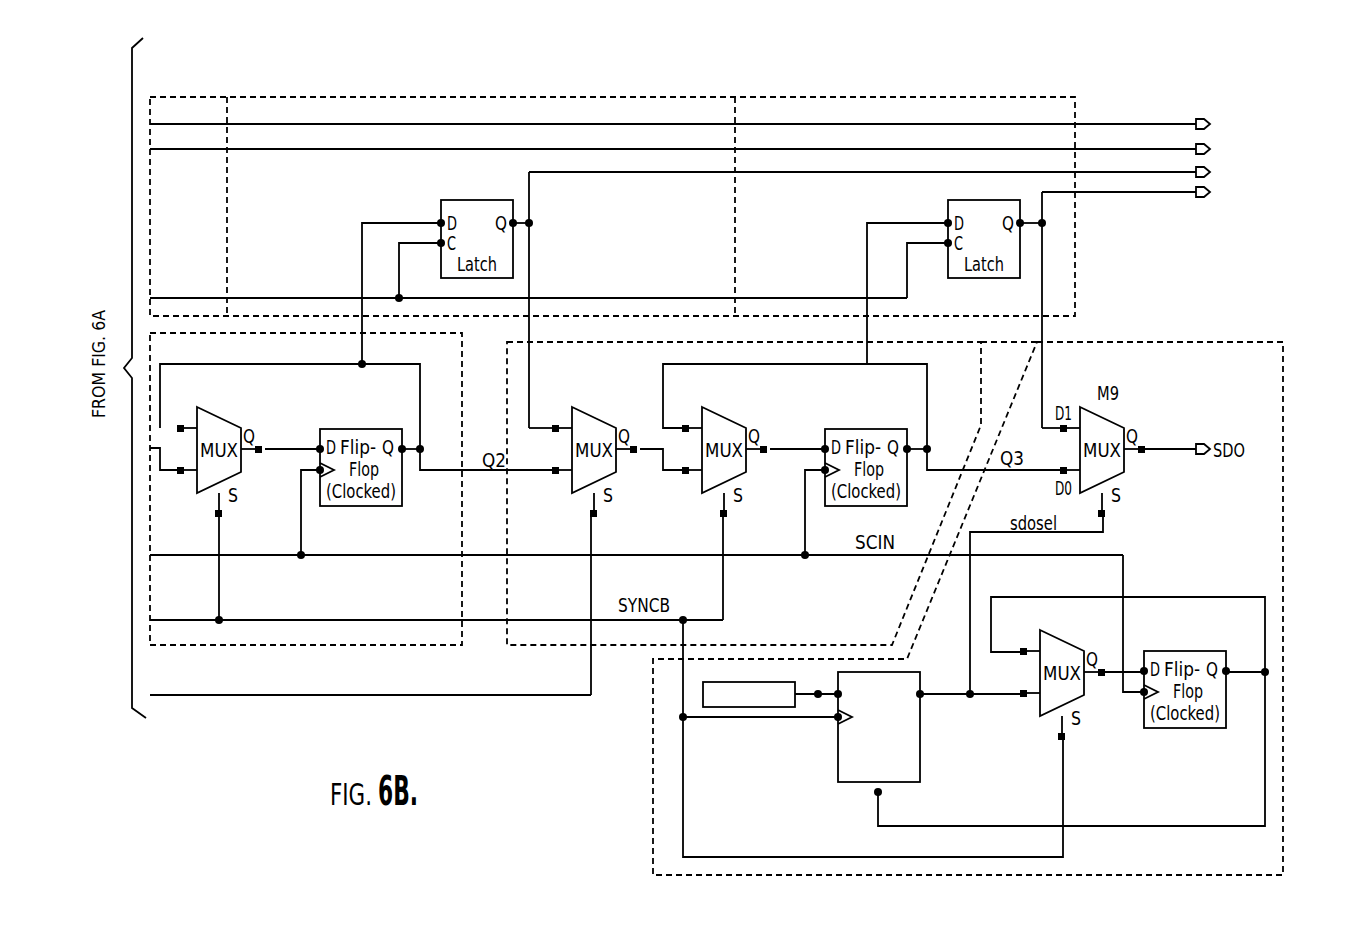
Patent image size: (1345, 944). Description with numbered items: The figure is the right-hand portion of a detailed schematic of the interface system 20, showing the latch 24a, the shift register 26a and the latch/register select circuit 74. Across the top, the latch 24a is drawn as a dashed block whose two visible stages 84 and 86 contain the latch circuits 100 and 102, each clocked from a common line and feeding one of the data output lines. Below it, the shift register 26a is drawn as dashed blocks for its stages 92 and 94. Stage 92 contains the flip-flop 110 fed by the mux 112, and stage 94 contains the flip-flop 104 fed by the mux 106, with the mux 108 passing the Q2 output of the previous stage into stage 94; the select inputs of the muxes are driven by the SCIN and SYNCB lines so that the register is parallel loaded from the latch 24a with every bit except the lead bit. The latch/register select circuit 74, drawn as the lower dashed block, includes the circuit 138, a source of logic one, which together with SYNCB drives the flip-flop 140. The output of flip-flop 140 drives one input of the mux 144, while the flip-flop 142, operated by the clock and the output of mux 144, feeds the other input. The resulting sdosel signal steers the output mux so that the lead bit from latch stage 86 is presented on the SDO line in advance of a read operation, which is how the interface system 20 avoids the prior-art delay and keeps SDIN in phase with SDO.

The interface system 20 is at (1344, 69).
The latch 24a is at (472, 97).
The shift register 26a is at (983, 353).
The latch/register select circuit 74 is at (1283, 427).
The latch stage 84 is at (332, 97).
The latch stage 86 is at (885, 97).
The register stage 92 is at (367, 599).
The register stage 94 is at (800, 599).
The latch circuit 100 is at (503, 248).
The latch circuit 102 is at (1002, 202).
The flip-flop 104 is at (890, 428).
The mux 106 is at (720, 420).
The mux 108 is at (600, 417).
The flip-flop 110 is at (388, 428).
The mux 112 is at (220, 413).
The circuit 138 is at (720, 707).
The flip-flop 140 is at (922, 737).
The flip-flop 142 is at (1187, 651).
The mux 144 is at (1060, 645).